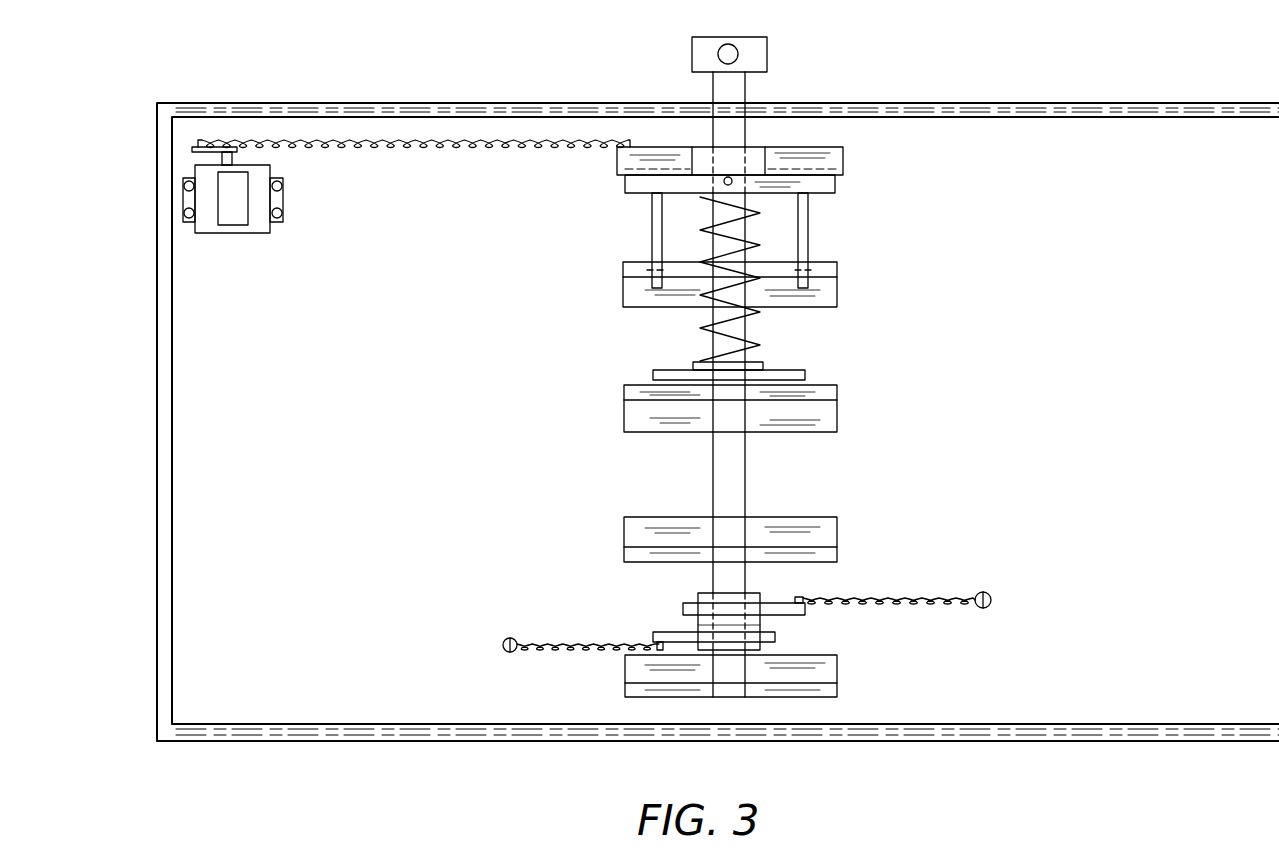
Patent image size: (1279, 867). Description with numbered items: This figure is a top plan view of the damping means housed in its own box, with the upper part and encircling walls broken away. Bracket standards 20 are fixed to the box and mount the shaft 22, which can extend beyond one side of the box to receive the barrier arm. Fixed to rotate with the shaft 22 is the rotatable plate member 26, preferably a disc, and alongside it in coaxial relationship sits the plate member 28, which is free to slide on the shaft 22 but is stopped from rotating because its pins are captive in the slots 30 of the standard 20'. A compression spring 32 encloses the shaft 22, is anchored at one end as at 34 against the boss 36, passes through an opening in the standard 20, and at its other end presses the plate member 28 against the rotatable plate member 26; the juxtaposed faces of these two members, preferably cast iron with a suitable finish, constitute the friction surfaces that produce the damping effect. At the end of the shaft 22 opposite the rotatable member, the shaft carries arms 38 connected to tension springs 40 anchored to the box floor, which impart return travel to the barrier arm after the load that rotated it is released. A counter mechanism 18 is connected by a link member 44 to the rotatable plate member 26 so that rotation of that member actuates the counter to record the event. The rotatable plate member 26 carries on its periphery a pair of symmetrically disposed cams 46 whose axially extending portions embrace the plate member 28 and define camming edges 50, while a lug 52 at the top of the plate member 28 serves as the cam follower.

The counter mechanism 18 is at (233, 233).
The link member 44 is at (375, 142).
The rotatable plate member 26 is at (755, 150).
The cams 46 is at (820, 160).
The camming edges 50 is at (824, 190).
The plate member 28 is at (807, 185).
The lug 52 is at (722, 182).
The compression spring 32 is at (698, 228).
The slots 30 is at (715, 271).
The standard 20' is at (766, 294).
The spring anchor 34 is at (710, 362).
The boss 36 is at (752, 362).
The shaft 22 is at (745, 487).
The arms 38 is at (673, 632).
The tension springs 40 is at (580, 645).
The bracket standards 20 is at (697, 690).